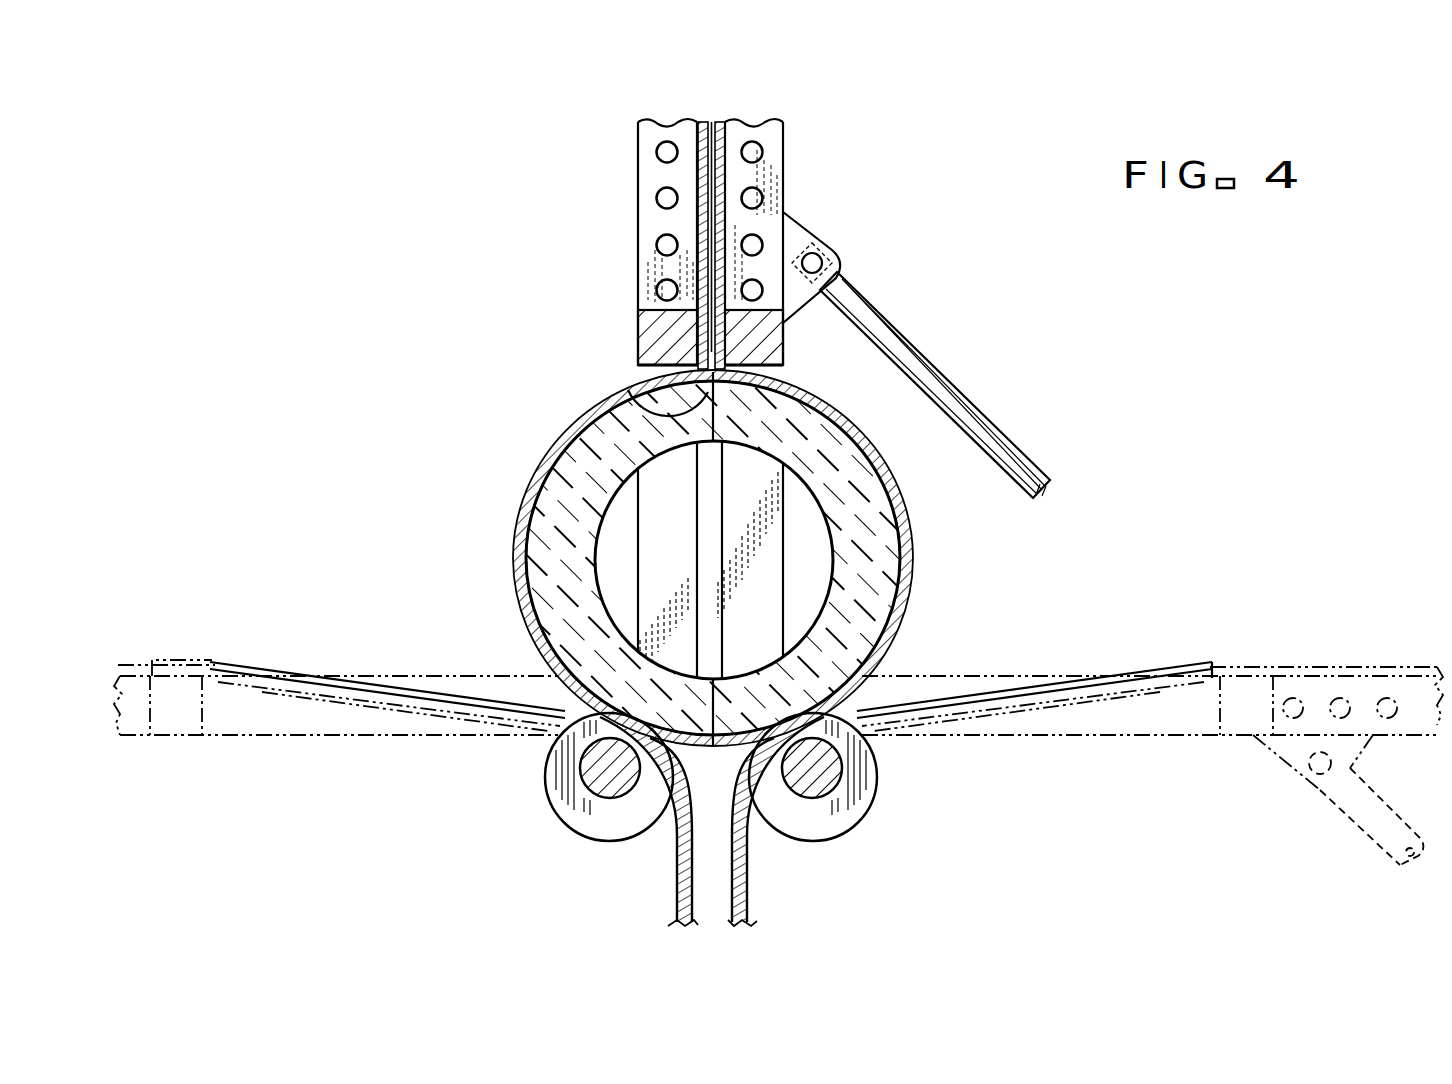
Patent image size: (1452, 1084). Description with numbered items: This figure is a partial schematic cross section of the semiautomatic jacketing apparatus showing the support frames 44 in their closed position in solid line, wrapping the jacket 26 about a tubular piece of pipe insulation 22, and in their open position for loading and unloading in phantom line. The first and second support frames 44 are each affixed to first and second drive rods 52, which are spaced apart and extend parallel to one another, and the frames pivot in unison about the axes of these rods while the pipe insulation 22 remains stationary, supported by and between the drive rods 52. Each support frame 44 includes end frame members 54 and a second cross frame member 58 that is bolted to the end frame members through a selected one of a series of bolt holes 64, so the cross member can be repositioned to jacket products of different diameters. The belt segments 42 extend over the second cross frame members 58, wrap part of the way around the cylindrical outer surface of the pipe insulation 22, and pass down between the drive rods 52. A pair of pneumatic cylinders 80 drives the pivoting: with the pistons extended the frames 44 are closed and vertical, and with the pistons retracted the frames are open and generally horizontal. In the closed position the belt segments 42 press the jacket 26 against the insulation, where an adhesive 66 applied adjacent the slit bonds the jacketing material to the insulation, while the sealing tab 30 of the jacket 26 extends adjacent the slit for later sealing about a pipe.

The tubular piece of pipe insulation 22 is at (550, 572).
The jacket 26 is at (906, 582).
The sealing tab 30 is at (708, 348).
The belt segments 42 is at (524, 504).
The support frames 44 is at (778, 469).
The drive rods 52 is at (588, 838).
The end frame members 54 is at (650, 165).
The second cross frame member 58 is at (640, 322).
The bolt holes 64 is at (657, 203).
The adhesive 66 is at (660, 400).
The pneumatic cylinders 80 is at (990, 419).